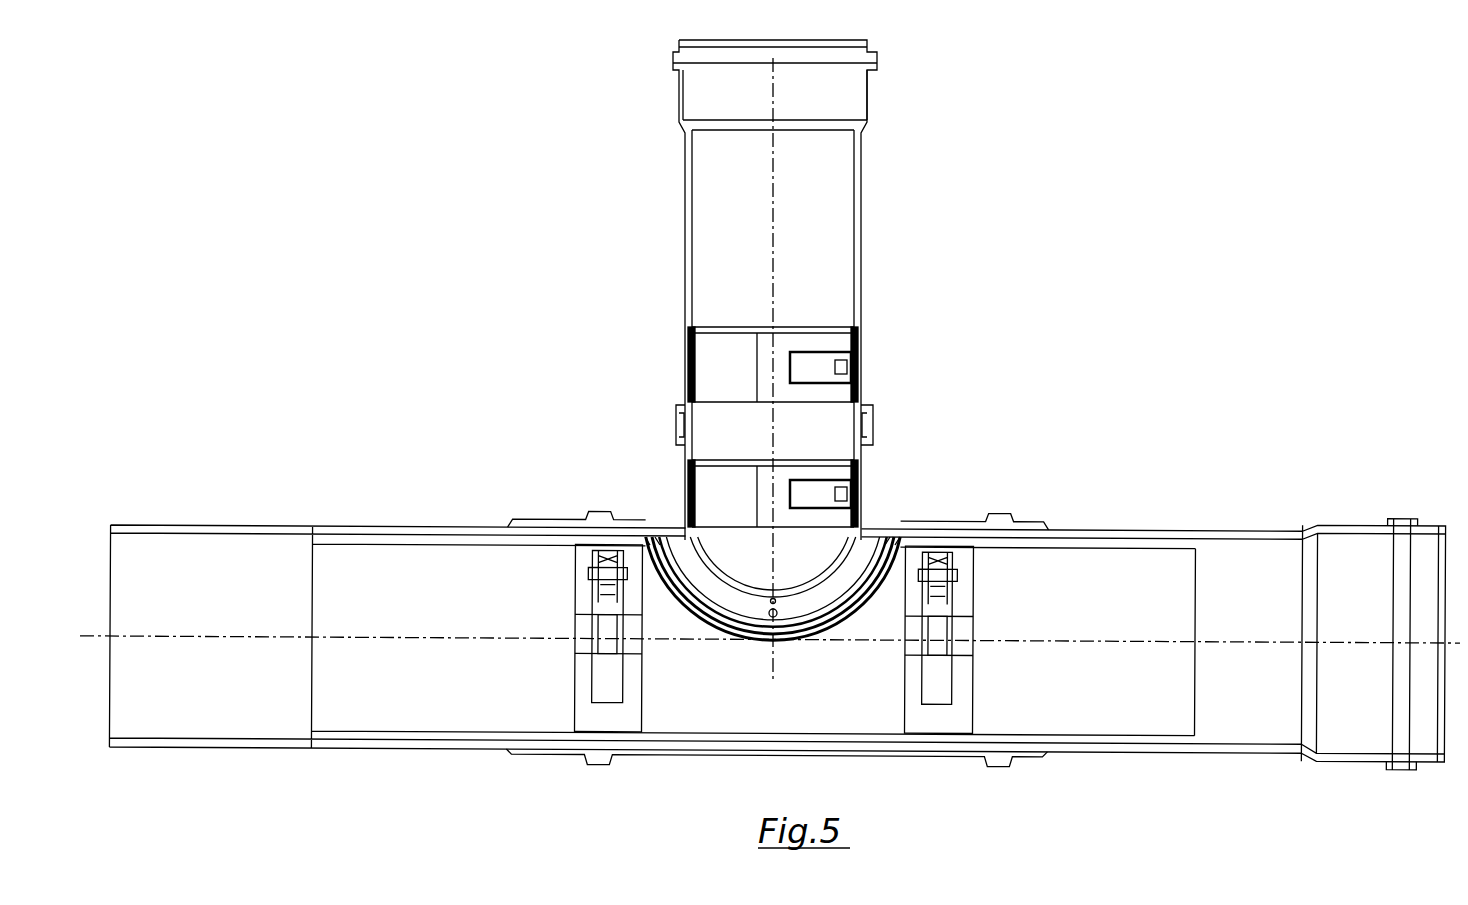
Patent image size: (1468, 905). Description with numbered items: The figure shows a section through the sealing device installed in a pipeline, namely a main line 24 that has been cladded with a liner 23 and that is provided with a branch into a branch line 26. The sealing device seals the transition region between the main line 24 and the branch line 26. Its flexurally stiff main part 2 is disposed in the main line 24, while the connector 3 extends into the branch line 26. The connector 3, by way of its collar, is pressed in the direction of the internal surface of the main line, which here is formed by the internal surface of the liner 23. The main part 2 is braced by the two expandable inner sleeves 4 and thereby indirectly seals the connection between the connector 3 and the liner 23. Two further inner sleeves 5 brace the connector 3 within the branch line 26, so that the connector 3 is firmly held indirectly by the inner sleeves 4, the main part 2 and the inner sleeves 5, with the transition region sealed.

The main part 2 is at (860, 633).
The connector 3 is at (832, 437).
The first expandable inner sleeve 4 is at (578, 594).
The inner sleeve 5 is at (712, 355).
The liner 23 is at (1157, 548).
The main line 24 is at (1298, 512).
The branch line 26 is at (888, 190).